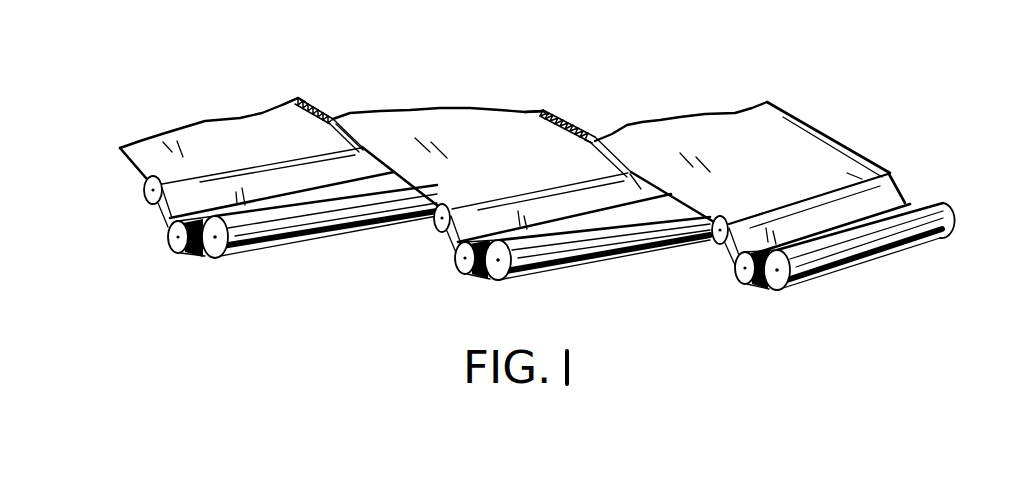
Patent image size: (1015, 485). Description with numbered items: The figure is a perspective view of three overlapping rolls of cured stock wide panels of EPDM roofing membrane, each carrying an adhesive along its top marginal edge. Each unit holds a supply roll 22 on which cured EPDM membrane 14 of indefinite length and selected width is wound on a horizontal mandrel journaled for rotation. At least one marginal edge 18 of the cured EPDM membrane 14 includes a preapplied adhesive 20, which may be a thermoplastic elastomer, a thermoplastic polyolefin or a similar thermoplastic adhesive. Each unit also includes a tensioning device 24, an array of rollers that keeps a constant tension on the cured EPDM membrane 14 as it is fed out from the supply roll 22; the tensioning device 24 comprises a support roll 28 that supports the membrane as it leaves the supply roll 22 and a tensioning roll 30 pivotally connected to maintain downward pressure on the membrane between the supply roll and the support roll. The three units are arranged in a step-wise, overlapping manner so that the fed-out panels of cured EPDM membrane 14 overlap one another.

The cured EPDM membrane 14 is at (180, 133).
The marginal edge 18 is at (305, 84).
The preapplied adhesive 20 is at (331, 117).
The supply roll 22 is at (282, 222).
The tensioning device 24 is at (447, 292).
The support roll 28 is at (713, 243).
The tensioning roll 30 is at (182, 253).